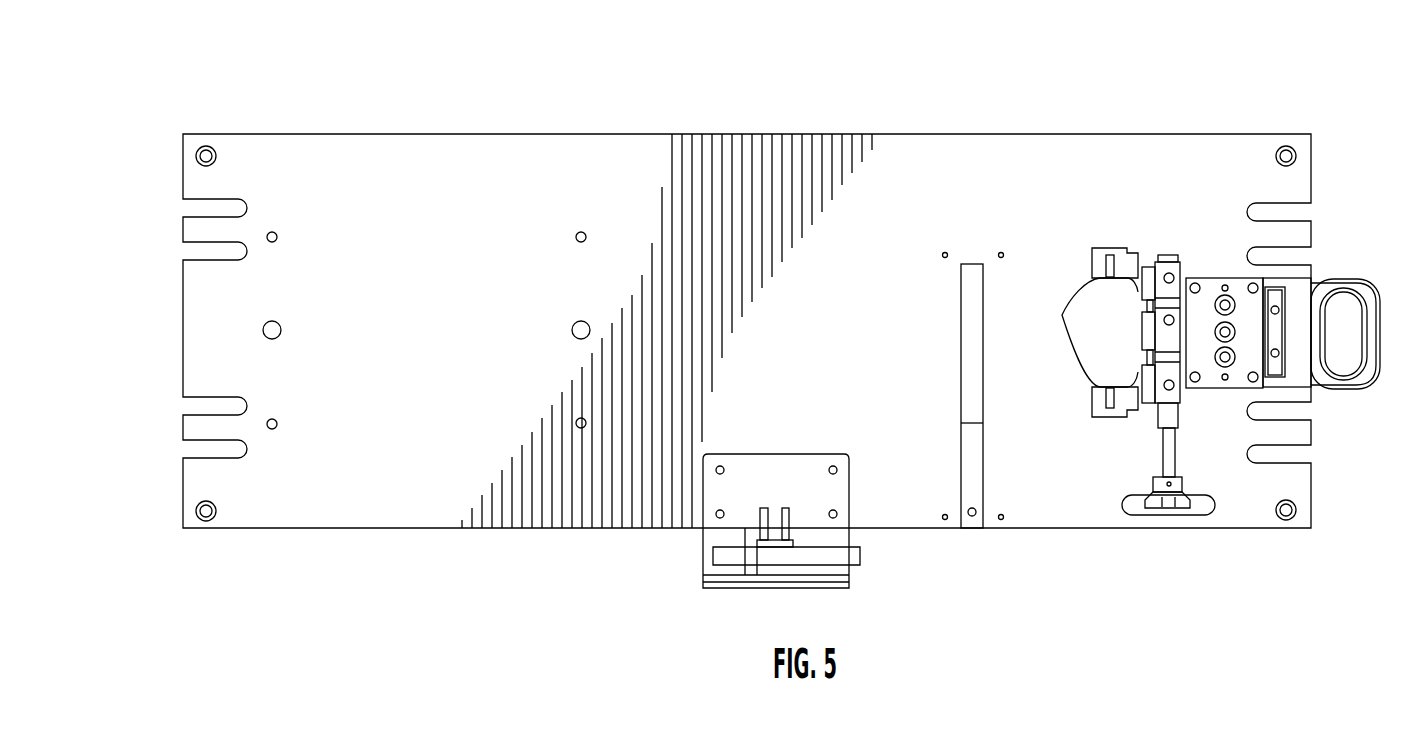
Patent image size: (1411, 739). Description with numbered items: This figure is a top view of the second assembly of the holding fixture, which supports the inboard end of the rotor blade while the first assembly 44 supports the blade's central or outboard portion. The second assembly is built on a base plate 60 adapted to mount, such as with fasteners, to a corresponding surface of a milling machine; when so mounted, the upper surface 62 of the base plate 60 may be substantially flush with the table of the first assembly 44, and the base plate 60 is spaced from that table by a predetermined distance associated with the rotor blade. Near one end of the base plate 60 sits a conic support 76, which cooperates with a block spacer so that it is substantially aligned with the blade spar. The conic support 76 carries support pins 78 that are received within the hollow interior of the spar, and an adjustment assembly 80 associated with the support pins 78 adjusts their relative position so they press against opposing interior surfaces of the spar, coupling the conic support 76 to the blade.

The first assembly 44 is at (1147, 53).
The base plate 60 is at (277, 133).
The upper surface 62 is at (457, 173).
The conic support 76 is at (1245, 321).
The support pin 78 is at (1062, 315).
The adjustment assembly 80 is at (1133, 505).